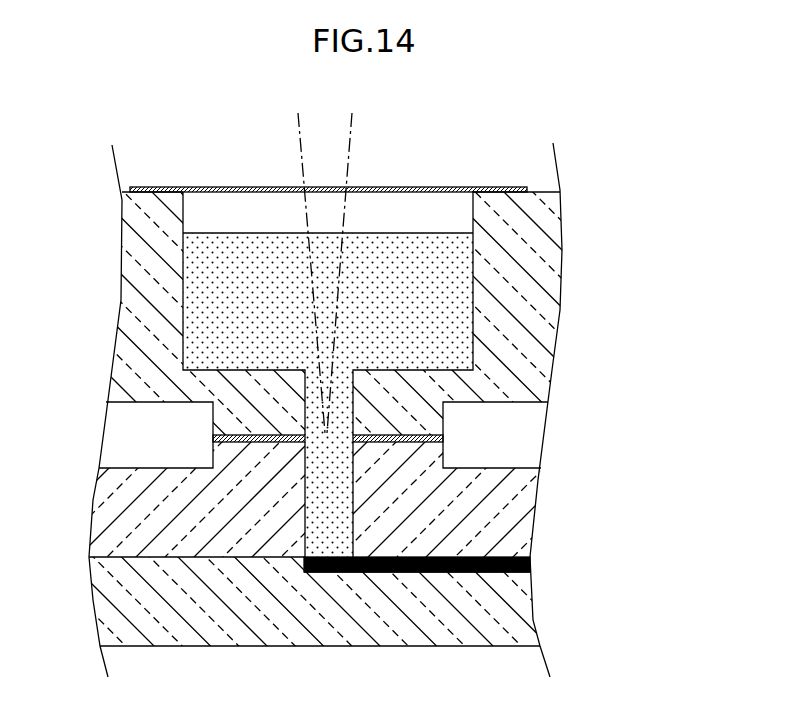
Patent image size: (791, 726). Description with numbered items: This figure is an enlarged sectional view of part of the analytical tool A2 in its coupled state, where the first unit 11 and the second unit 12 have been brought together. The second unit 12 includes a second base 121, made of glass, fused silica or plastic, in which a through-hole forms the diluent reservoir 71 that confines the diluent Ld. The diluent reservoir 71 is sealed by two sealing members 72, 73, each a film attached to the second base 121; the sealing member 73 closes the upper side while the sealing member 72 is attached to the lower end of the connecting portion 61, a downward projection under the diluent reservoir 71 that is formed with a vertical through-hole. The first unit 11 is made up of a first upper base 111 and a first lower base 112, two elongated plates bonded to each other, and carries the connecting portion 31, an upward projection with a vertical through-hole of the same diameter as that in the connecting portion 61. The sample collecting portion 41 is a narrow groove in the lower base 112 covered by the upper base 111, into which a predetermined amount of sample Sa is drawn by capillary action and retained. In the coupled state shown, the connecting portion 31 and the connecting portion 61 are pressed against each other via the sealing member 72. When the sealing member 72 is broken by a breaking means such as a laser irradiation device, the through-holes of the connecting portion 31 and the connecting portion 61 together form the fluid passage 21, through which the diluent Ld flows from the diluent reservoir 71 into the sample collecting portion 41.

The analytical tool A2 is at (103, 106).
The sealing member 73 is at (245, 187).
The diluent reservoir 71 is at (473, 278).
The diluent Ld is at (373, 273).
The second base 121 is at (518, 281).
The second unit 12 is at (391, 363).
The connecting portion 61 is at (410, 423).
The sealing member 72 is at (213, 438).
The connecting portion 31 is at (418, 450).
The first unit 11 is at (370, 363).
The first upper base 111 is at (507, 532).
The first lower base 112 is at (510, 590).
The fluid passage 21 is at (323, 512).
The sample collecting portion 41 is at (427, 575).
The sample Sa is at (380, 573).